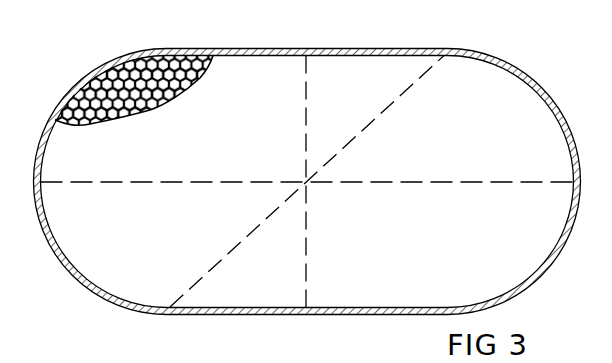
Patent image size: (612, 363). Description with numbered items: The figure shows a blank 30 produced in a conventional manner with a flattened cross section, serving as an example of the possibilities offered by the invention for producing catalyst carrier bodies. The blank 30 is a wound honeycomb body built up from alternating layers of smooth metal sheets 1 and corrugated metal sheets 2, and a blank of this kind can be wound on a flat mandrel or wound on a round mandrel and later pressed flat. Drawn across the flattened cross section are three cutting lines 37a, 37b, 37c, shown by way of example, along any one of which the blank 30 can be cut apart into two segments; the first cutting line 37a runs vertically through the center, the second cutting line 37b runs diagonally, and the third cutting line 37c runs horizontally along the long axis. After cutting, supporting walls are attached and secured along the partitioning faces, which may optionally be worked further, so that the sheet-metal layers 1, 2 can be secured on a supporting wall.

The smooth metal sheets 1 is at (124, 68).
The corrugated metal sheets 2 is at (157, 51).
The blank 30 is at (80, 252).
The cutting line 37a is at (306, 72).
The cutting line 37b is at (415, 80).
The cutting line 37c is at (483, 182).